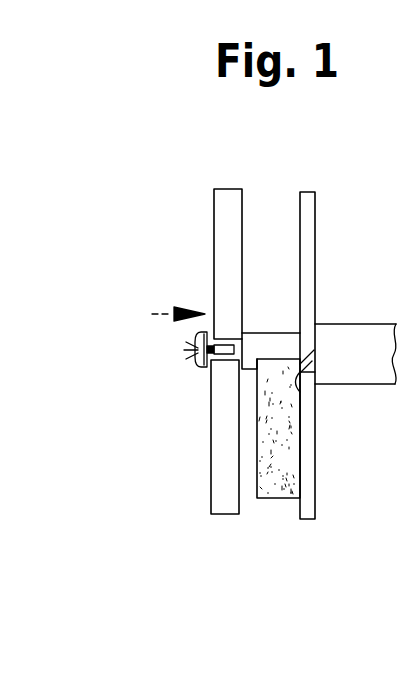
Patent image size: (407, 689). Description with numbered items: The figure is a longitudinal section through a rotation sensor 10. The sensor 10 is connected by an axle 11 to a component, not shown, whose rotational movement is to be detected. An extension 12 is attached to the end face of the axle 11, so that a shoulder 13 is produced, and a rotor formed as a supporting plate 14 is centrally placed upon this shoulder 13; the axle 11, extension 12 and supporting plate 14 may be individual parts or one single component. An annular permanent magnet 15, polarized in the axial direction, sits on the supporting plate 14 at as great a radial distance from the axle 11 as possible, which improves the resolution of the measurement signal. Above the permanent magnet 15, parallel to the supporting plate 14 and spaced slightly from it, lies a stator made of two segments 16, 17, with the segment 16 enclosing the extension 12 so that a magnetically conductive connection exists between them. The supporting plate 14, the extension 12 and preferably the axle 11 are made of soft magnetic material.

The sensor 10 is at (372, 223).
The axle 11 is at (357, 347).
The extension 12 is at (270, 343).
The shoulder 13 is at (299, 390).
The supporting plate 14 is at (309, 229).
The permanent magnet 15 is at (276, 497).
The segment 16 is at (222, 500).
The segment 17 is at (223, 213).